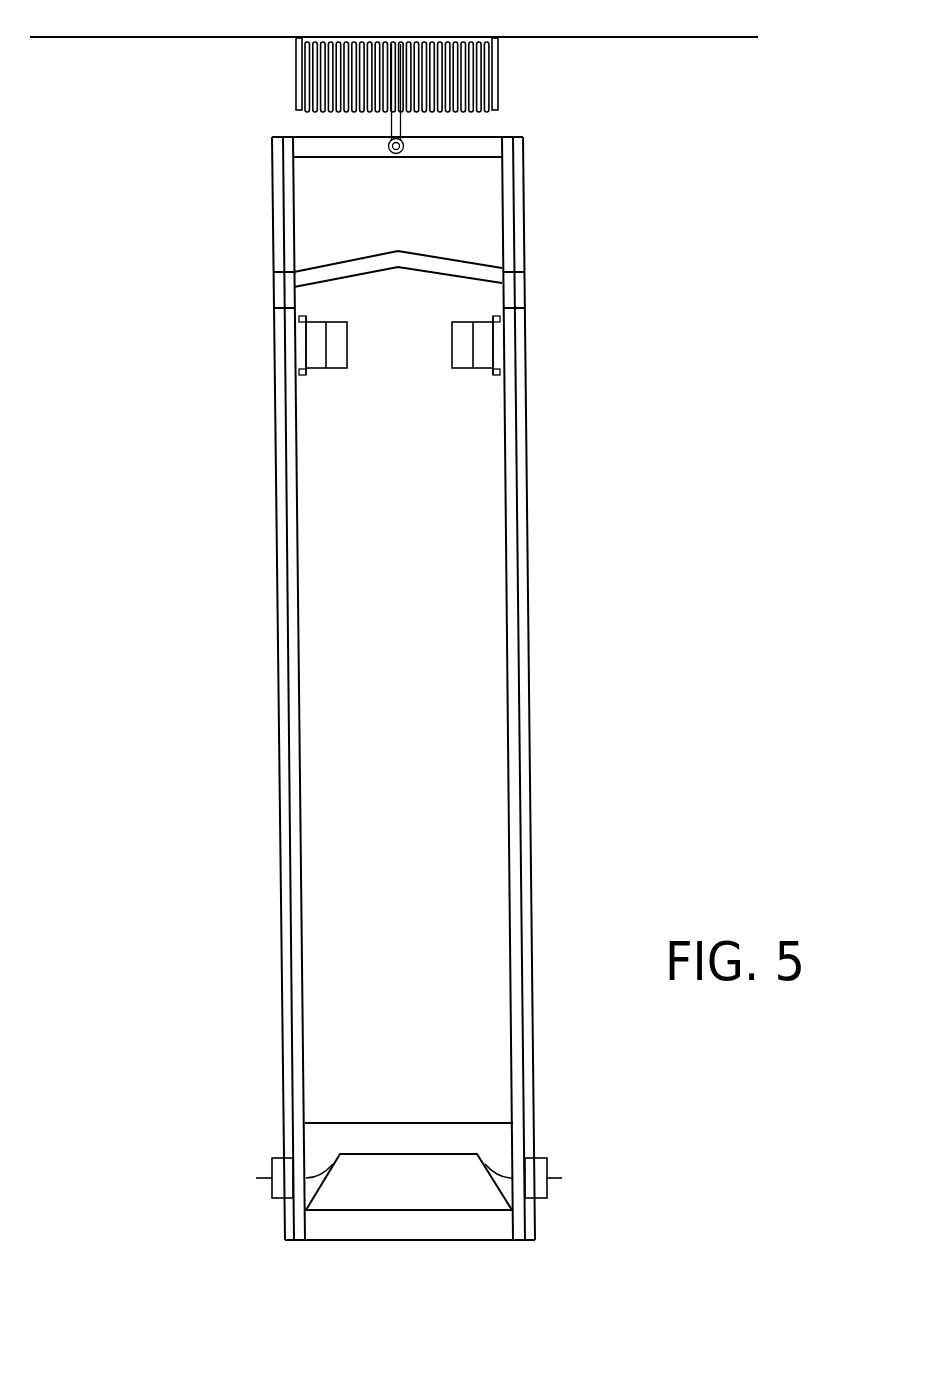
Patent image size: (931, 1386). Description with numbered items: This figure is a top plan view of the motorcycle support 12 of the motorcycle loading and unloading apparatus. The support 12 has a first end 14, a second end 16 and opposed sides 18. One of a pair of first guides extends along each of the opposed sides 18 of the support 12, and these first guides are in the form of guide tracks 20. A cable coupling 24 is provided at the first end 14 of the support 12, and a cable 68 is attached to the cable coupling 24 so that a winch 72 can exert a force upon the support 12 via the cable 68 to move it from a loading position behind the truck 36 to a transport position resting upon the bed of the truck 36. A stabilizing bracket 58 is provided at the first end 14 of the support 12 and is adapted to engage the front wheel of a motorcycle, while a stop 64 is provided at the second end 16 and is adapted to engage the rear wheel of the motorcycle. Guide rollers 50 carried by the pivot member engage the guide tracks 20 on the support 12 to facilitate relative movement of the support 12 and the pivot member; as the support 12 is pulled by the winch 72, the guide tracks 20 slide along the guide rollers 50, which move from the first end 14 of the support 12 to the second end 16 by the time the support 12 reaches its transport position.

The motorcycle support 12 is at (480, 568).
The first end 14 is at (494, 134).
The second end 16 is at (455, 1242).
The opposed sides 18 is at (278, 705).
The guide tracks 20 is at (277, 465).
The cable coupling 24 is at (389, 151).
The truck 36 is at (688, 39).
The guide rollers 50 is at (272, 1167).
The stabilizing bracket 58 is at (445, 258).
The stop 64 is at (372, 1178).
The cable 68 is at (403, 122).
The winch 72 is at (498, 67).